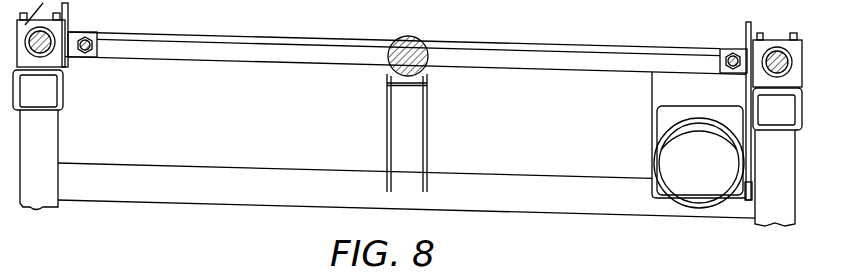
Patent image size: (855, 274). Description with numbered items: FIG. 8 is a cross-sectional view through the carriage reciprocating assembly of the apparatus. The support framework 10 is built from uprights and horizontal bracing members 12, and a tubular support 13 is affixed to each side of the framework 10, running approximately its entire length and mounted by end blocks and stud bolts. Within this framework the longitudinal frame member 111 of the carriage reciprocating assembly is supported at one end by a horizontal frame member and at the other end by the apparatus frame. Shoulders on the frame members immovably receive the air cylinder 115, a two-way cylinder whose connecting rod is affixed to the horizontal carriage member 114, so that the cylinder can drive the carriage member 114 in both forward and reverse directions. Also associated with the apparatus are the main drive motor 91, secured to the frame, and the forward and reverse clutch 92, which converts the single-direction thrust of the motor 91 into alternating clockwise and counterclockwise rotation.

The support framework 10 is at (798, 164).
The horizontal bracing member 12 is at (584, 200).
The tubular support 13 is at (47, 40).
The main drive motor 91 is at (718, 210).
The forward and reverse clutch 92 is at (753, 200).
The longitudinal frame member 111 is at (428, 86).
The horizontal carriage member 114 is at (550, 70).
The air cylinder 115 is at (418, 38).